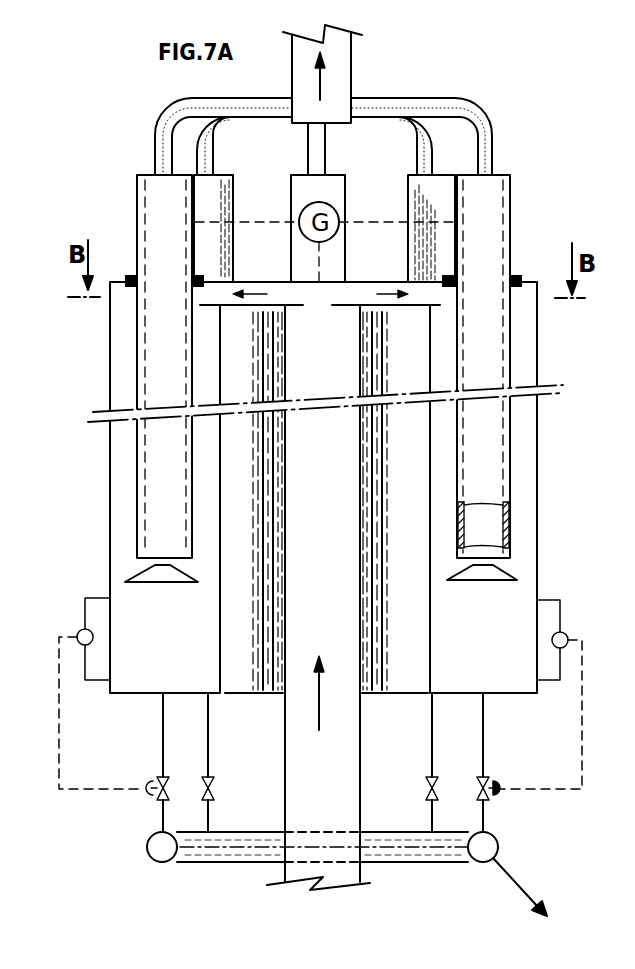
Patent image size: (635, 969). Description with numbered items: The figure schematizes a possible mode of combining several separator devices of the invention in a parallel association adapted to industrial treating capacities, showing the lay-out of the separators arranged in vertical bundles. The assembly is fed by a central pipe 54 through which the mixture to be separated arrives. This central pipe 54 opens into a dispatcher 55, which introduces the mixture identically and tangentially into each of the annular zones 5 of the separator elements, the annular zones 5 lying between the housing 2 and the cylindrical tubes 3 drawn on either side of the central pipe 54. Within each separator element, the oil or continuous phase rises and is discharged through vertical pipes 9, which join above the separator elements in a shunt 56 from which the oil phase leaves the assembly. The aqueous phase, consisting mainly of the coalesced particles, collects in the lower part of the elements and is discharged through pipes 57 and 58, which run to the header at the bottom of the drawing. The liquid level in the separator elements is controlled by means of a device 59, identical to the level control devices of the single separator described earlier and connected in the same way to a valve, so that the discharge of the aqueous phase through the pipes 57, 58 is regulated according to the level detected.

The housing 2 is at (537, 349).
The cylinder tube 3 is at (512, 467).
The annular zone 5 is at (523, 419).
The vertical pipe 9 is at (493, 520).
The central pipe 54 is at (333, 783).
The dispatcher 55 is at (285, 282).
The shunt 56 is at (351, 52).
The pipe 57 is at (410, 862).
The pipe 58 is at (487, 814).
The level control device 59 is at (575, 617).